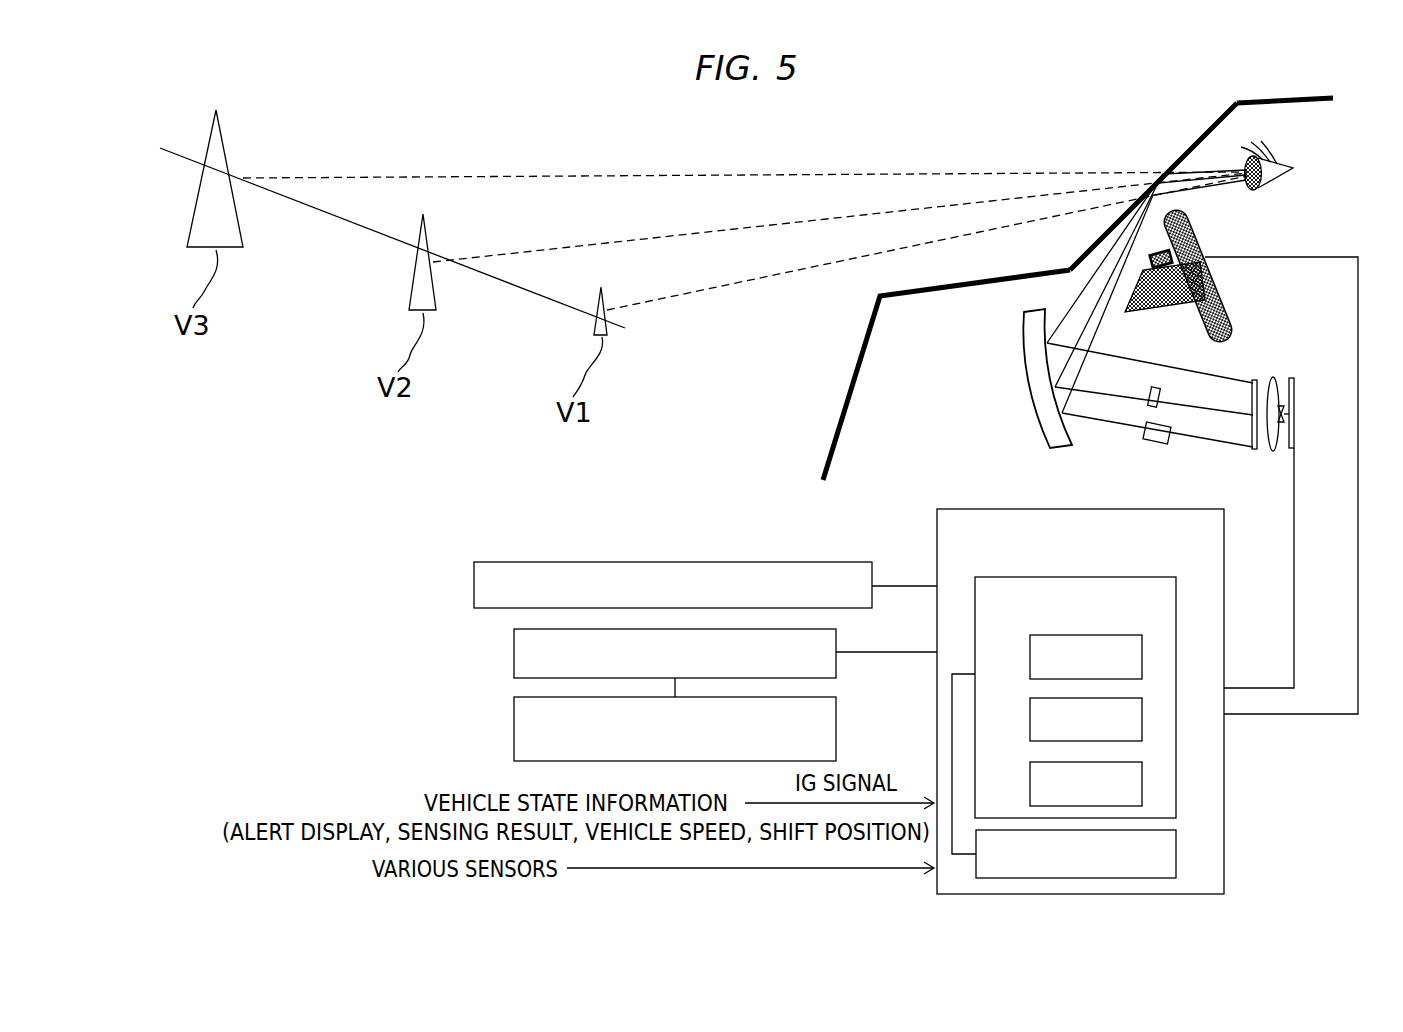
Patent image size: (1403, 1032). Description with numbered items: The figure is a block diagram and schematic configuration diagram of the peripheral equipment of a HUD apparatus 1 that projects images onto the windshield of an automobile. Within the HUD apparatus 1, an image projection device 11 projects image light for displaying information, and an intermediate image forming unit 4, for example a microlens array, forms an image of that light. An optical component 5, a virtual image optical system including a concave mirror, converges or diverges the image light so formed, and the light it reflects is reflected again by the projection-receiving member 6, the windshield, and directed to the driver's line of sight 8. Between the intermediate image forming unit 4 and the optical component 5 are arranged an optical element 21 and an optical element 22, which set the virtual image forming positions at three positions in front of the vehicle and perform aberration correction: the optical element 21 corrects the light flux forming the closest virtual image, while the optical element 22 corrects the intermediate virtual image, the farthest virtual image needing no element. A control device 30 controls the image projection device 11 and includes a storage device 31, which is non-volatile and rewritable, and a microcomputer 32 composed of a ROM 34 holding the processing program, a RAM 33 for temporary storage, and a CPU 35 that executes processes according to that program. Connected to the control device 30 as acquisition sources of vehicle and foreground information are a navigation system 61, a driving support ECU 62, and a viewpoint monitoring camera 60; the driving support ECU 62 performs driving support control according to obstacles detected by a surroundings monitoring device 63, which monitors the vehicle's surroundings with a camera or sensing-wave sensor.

The HUD apparatus 1 is at (988, 368).
The intermediate image forming unit 4 is at (1256, 378).
The optical component 5 is at (1023, 360).
The projection-receiving member 6 is at (1192, 149).
The driver's line of sight 8 is at (1289, 168).
The image projection device 11 is at (1298, 405).
The optical element 21 is at (1155, 444).
The optical element 22 is at (1149, 405).
The control device 30 is at (1132, 701).
The storage device 31 is at (1176, 856).
The microcomputer 32 is at (1127, 686).
The RAM 33 is at (1142, 661).
The ROM 34 is at (1142, 722).
The CPU 35 is at (1142, 786).
The viewpoint monitoring camera 60 is at (1152, 253).
The navigation system 61 is at (474, 583).
The driving support ECU 62 is at (514, 657).
The surroundings monitoring device 63 is at (514, 725).